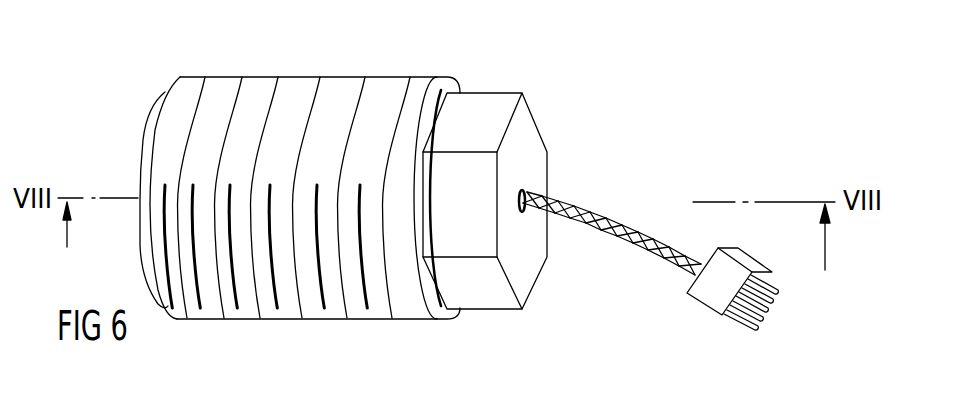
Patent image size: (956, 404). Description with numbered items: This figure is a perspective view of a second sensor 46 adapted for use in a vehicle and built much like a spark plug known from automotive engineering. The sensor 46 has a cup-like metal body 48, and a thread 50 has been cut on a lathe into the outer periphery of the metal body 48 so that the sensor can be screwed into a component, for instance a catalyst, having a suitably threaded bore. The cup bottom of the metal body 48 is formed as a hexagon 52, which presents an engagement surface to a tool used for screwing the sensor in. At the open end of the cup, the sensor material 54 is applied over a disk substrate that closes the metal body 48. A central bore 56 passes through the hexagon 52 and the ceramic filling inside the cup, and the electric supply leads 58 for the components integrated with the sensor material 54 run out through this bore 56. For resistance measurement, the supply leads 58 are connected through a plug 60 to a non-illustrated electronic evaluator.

The second sensor 46 is at (631, 101).
The cup-like metal body 48 is at (303, 77).
The thread 50 is at (232, 298).
The hexagon 52 is at (488, 105).
The sensor material 54 is at (142, 143).
The central bore 56 is at (522, 192).
The electric supply leads 58 is at (614, 233).
The plug 60 is at (746, 260).